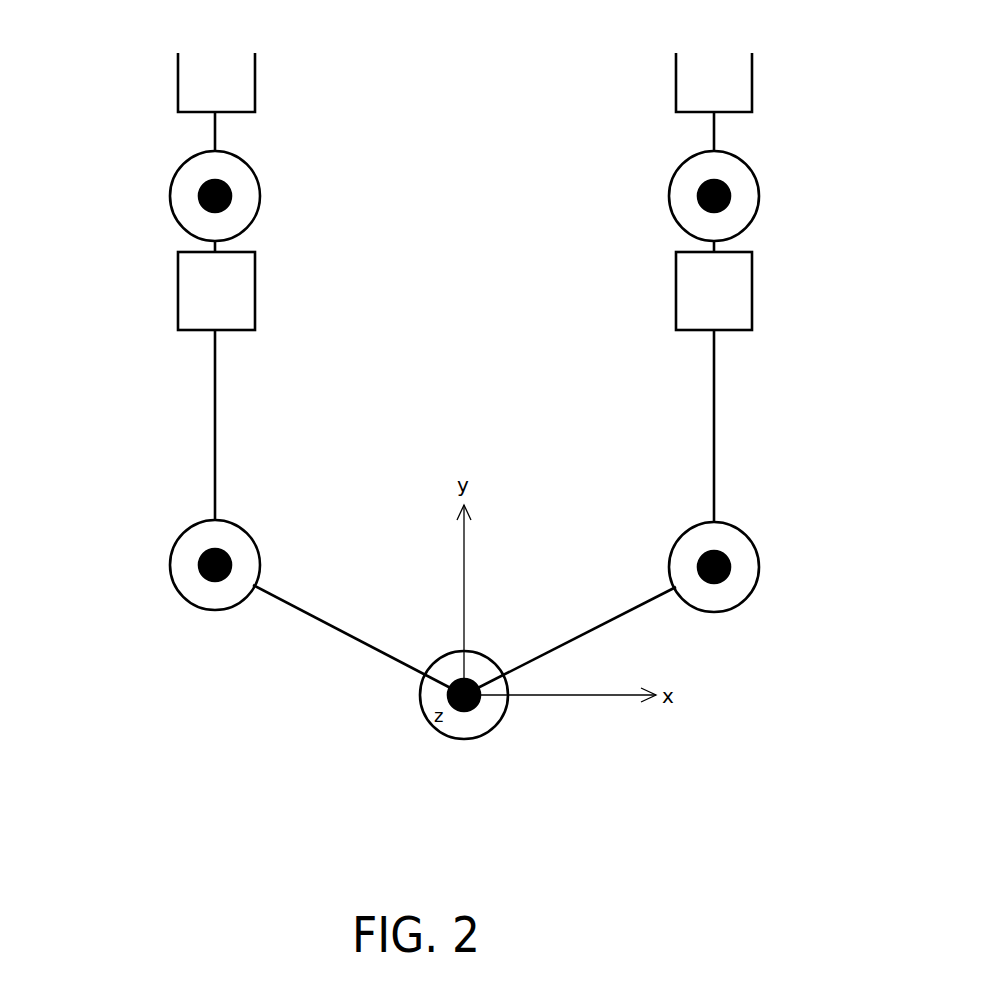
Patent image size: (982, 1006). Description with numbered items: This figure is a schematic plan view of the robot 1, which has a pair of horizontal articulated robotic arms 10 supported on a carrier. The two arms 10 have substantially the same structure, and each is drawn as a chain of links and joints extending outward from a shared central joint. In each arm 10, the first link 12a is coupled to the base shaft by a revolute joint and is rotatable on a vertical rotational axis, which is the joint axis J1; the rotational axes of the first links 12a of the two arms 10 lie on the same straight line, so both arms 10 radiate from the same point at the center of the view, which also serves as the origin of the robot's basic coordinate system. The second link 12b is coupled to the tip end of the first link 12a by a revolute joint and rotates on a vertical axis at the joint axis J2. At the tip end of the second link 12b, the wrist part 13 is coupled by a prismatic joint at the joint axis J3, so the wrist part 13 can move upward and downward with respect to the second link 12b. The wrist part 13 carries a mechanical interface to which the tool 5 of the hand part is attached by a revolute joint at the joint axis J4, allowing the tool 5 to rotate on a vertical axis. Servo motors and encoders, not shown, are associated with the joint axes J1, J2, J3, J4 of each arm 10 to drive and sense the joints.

The robot 1 is at (758, 694).
The tool 5 is at (178, 84).
The arm 10 is at (118, 429).
The first link 12a is at (318, 612).
The second link 12b is at (213, 437).
The wrist part 13 is at (157, 271).
The joint axis J1 is at (495, 728).
The joint axis J2 is at (180, 598).
The joint axis J3 is at (178, 325).
The joint axis J4 is at (170, 195).